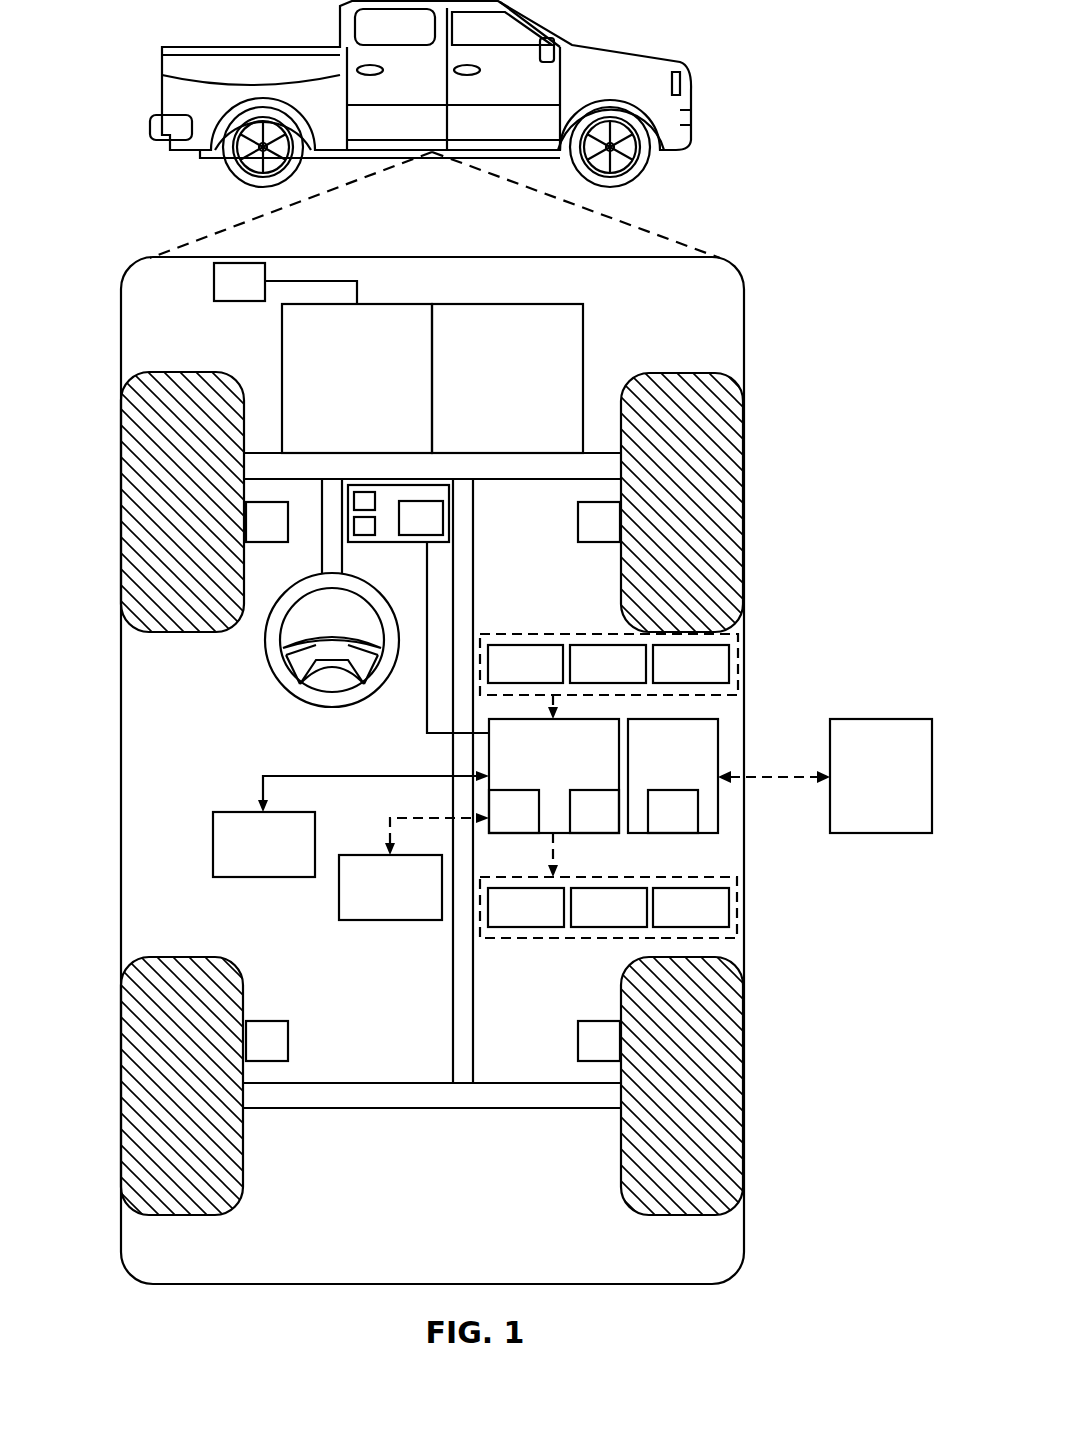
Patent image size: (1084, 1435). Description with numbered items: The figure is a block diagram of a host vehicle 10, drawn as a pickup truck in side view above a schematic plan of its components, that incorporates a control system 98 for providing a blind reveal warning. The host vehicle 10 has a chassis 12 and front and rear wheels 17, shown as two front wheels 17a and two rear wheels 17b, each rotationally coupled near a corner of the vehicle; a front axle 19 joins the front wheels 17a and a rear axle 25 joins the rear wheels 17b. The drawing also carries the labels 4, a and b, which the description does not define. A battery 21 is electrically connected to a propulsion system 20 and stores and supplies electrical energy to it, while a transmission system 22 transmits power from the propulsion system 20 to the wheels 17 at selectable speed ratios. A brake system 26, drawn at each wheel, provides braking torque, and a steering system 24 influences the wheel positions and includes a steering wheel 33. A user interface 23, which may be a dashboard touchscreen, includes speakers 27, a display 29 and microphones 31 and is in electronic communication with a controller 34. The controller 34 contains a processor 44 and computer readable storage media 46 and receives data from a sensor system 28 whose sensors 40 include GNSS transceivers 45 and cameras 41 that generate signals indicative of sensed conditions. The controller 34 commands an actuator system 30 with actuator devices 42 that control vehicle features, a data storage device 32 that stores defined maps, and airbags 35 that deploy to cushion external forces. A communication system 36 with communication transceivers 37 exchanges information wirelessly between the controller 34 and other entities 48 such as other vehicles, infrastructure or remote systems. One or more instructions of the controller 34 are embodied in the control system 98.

The host vehicle 10 is at (623, 45).
The vehicle body 4 is at (121, 731).
The battery 21 is at (240, 262).
The propulsion system 20 is at (340, 393).
The transmission system 22 is at (490, 393).
The front and rear wheels 17 is at (448, 778).
The front wheels 17a is at (718, 489).
The rear wheels 17b is at (718, 1077).
The front driver-side wheel a is at (148, 489).
The rear driver-side wheel b is at (148, 1077).
The front axle 19 is at (545, 480).
The rear axle 25 is at (510, 1083).
The chassis 12 is at (451, 956).
The brake system 26 is at (251, 537).
The user interface 23 is at (386, 500).
The speakers 27 is at (362, 492).
The microphones 31 is at (405, 532).
The displays 29 is at (354, 528).
The steering system 24 is at (352, 546).
The steering wheel 33 is at (266, 652).
The sensor system 28 is at (609, 656).
The sensors 40 is at (509, 679).
The GNSS transceivers 45 is at (592, 679).
The cameras 41 is at (675, 679).
The controller 34 is at (554, 776).
The processor 44 is at (498, 825).
The computer readable storage device or media 46 is at (578, 825).
The communication system 36 is at (673, 776).
The communication transceivers 37 is at (657, 825).
The other entities 48 is at (864, 791).
The control system 98 is at (394, 750).
The airbags 35 is at (247, 859).
The data storage device 32 is at (373, 902).
The actuator system 30 is at (608, 906).
The actuator devices 42 is at (510, 922).